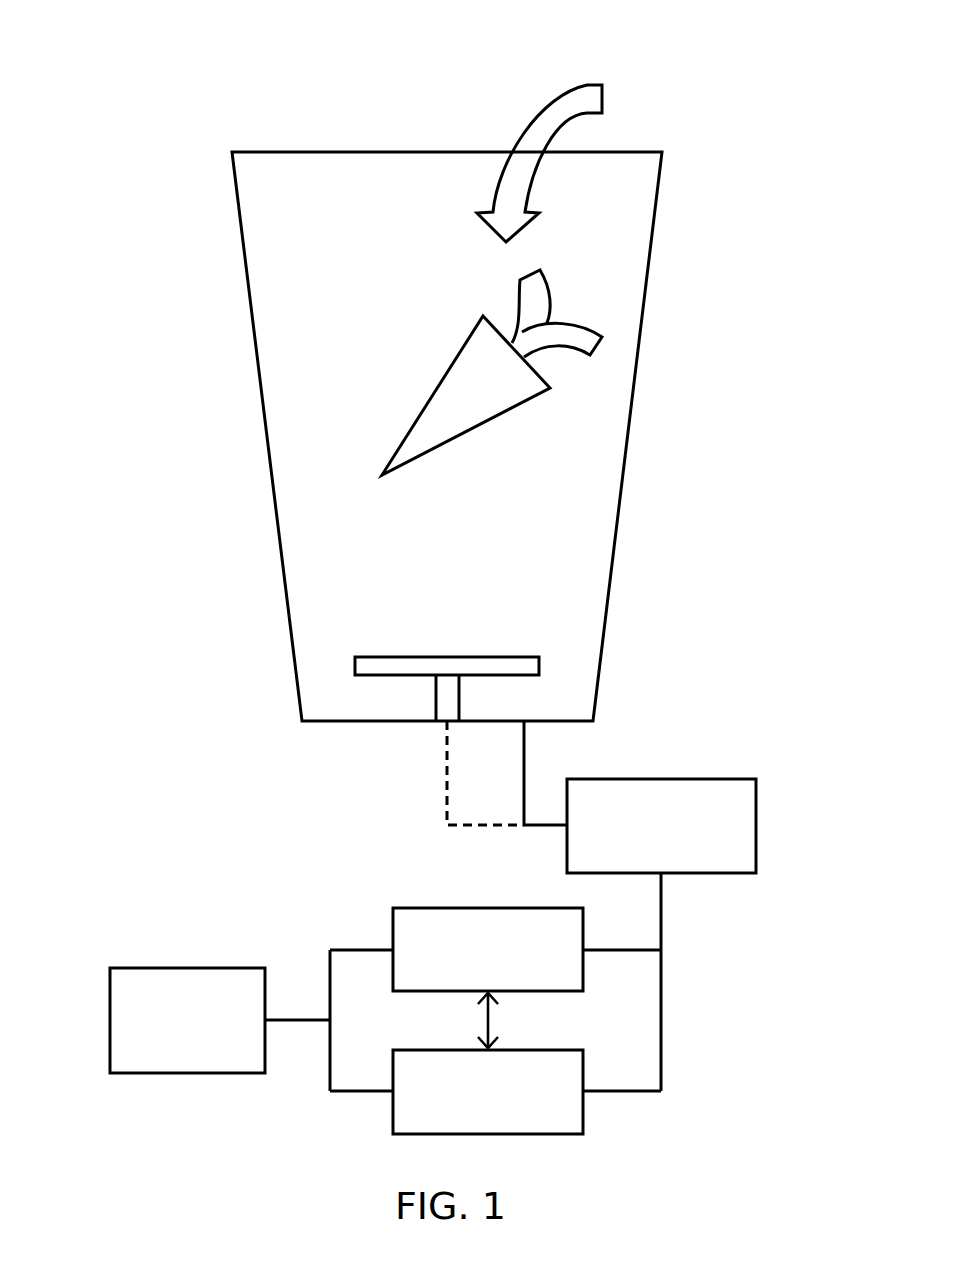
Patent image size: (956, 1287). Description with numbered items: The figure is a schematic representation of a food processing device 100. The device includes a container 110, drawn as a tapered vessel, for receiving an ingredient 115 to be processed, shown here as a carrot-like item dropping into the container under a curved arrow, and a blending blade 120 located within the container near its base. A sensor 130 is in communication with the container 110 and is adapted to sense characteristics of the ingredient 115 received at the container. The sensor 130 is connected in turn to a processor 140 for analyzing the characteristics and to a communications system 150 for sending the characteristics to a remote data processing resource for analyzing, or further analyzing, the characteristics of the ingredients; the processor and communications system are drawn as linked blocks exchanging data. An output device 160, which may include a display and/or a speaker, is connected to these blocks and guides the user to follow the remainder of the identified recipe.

The food processing device 100 is at (158, 128).
The container 110 is at (257, 362).
The ingredient 115 is at (503, 415).
The blending blade 120 is at (380, 655).
The sensor 130 is at (685, 779).
The processor 140 is at (417, 908).
The communications system 150 is at (582, 1068).
The output device 160 is at (163, 968).